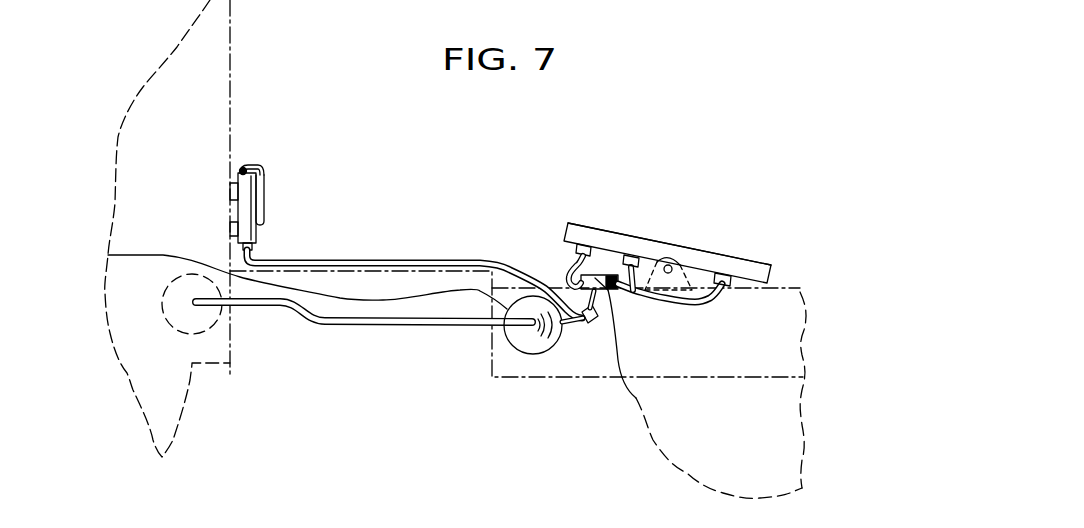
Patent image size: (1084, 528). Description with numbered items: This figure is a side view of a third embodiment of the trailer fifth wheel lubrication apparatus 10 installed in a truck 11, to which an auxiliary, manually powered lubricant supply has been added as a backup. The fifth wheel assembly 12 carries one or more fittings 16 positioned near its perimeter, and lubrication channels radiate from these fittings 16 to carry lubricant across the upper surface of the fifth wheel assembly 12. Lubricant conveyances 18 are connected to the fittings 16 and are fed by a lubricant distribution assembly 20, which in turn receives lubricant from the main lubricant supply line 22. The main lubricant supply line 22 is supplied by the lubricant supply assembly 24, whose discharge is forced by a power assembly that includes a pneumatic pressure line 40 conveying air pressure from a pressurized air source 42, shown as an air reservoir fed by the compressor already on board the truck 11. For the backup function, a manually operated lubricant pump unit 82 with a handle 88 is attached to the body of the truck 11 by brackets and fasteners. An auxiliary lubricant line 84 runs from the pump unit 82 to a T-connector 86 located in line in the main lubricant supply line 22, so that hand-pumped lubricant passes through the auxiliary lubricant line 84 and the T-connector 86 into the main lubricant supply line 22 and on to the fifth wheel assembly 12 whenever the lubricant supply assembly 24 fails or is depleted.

The trailer fifth wheel lubrication apparatus 10 is at (667, 237).
The truck 11 is at (233, 97).
The fifth wheel assembly 12 is at (753, 267).
The fittings 16 is at (577, 250).
The lubricant conveyances 18 is at (710, 305).
The lubricant distribution assembly 20 is at (607, 282).
The main lubricant supply line 22 is at (637, 400).
The lubricant supply assembly 24 is at (523, 352).
The pneumatic pressure line 40 is at (373, 320).
The pressurized air source 42 is at (172, 322).
The manually operated lubricant pump unit 82 is at (247, 200).
The auxiliary lubricant line 84 is at (447, 272).
The T-connector 86 is at (592, 325).
The handle 88 is at (265, 210).